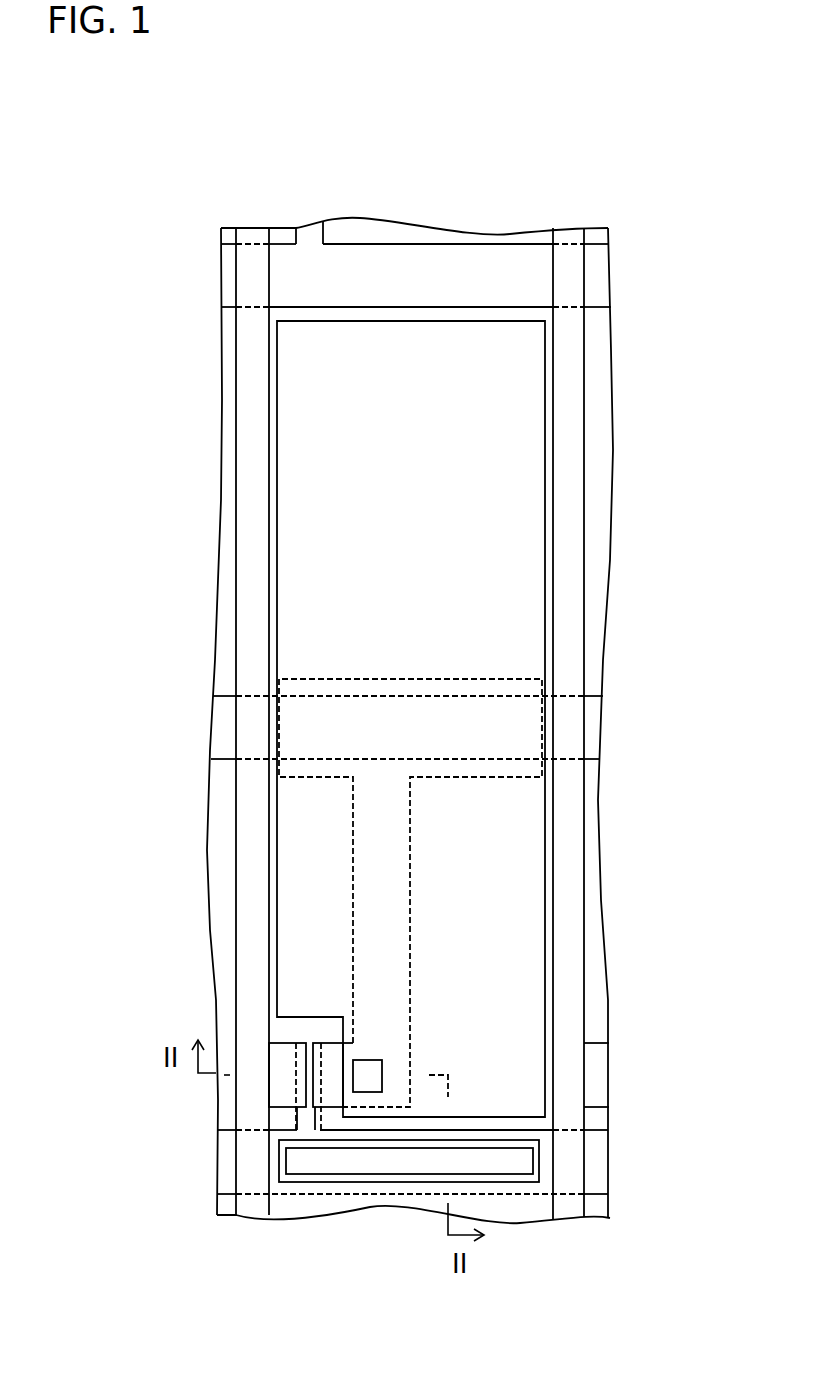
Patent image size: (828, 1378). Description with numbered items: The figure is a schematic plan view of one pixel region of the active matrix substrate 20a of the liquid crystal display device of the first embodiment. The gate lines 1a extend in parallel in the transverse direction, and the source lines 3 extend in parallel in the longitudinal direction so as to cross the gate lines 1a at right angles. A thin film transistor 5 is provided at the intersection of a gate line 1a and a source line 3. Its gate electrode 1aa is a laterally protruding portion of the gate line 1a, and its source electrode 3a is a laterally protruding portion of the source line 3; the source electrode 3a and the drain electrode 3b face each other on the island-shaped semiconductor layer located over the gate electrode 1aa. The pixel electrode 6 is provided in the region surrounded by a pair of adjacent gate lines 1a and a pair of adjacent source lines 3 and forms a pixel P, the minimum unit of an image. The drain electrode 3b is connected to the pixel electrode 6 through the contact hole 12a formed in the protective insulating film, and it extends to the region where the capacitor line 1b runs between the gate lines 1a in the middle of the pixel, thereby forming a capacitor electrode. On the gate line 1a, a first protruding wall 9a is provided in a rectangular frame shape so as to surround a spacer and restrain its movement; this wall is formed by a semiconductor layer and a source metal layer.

The active matrix substrate 20a is at (237, 160).
The gate line 1a is at (597, 278).
The gate electrode 1aa is at (308, 1117).
The capacitor line 1b is at (597, 728).
The source line 3 is at (248, 511).
The source electrode 3a is at (285, 1093).
The drain electrode 3b is at (331, 1088).
The thin film transistor 5 is at (287, 1073).
The pixel electrode 6 is at (515, 388).
The first protruding wall 9a is at (397, 1180).
The contact hole 12a is at (382, 1085).